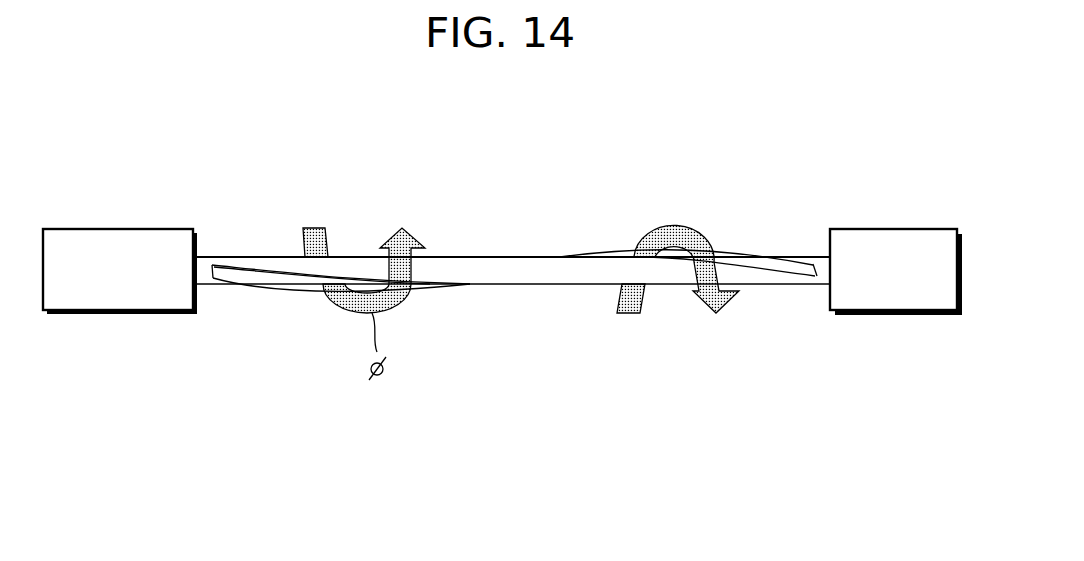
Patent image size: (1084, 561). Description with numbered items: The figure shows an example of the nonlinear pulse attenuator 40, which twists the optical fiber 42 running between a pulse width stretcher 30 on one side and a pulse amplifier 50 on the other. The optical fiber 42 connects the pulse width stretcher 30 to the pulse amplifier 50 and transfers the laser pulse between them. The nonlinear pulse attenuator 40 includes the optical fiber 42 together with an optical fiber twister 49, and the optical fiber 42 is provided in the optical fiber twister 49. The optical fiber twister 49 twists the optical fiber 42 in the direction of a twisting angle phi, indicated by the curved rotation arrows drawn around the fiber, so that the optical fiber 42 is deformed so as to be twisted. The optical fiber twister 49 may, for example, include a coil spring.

The pulse width stretcher 30 is at (122, 229).
The nonlinear pulse attenuator 40 is at (513, 216).
The optical fiber 42 is at (597, 268).
The optical fiber twister 49 is at (583, 158).
The pulse amplifier 50 is at (897, 229).